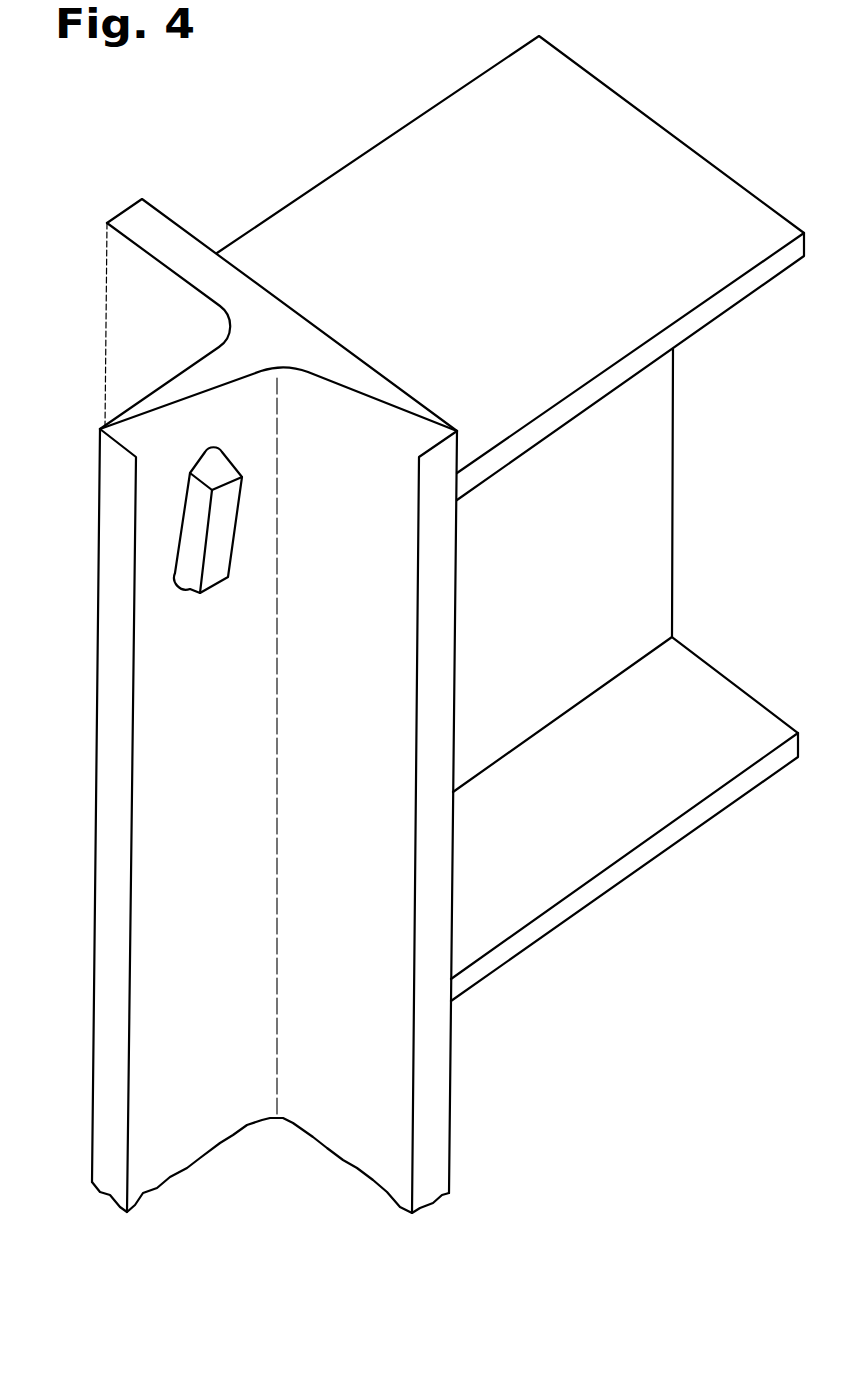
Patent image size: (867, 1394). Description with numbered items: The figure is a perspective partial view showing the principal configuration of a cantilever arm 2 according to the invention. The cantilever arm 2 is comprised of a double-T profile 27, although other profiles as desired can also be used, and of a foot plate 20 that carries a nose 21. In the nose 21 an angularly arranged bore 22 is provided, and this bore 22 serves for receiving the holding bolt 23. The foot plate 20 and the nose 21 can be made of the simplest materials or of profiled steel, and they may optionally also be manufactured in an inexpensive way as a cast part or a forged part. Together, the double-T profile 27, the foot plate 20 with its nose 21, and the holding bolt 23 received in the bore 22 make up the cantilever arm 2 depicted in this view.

The cantilever arm 2 is at (510, 569).
The foot plate 20 is at (347, 1103).
The nose 21 is at (113, 930).
The bore 22 is at (258, 555).
The holding bolt 23 is at (200, 557).
The double-T profile 27 is at (637, 515).